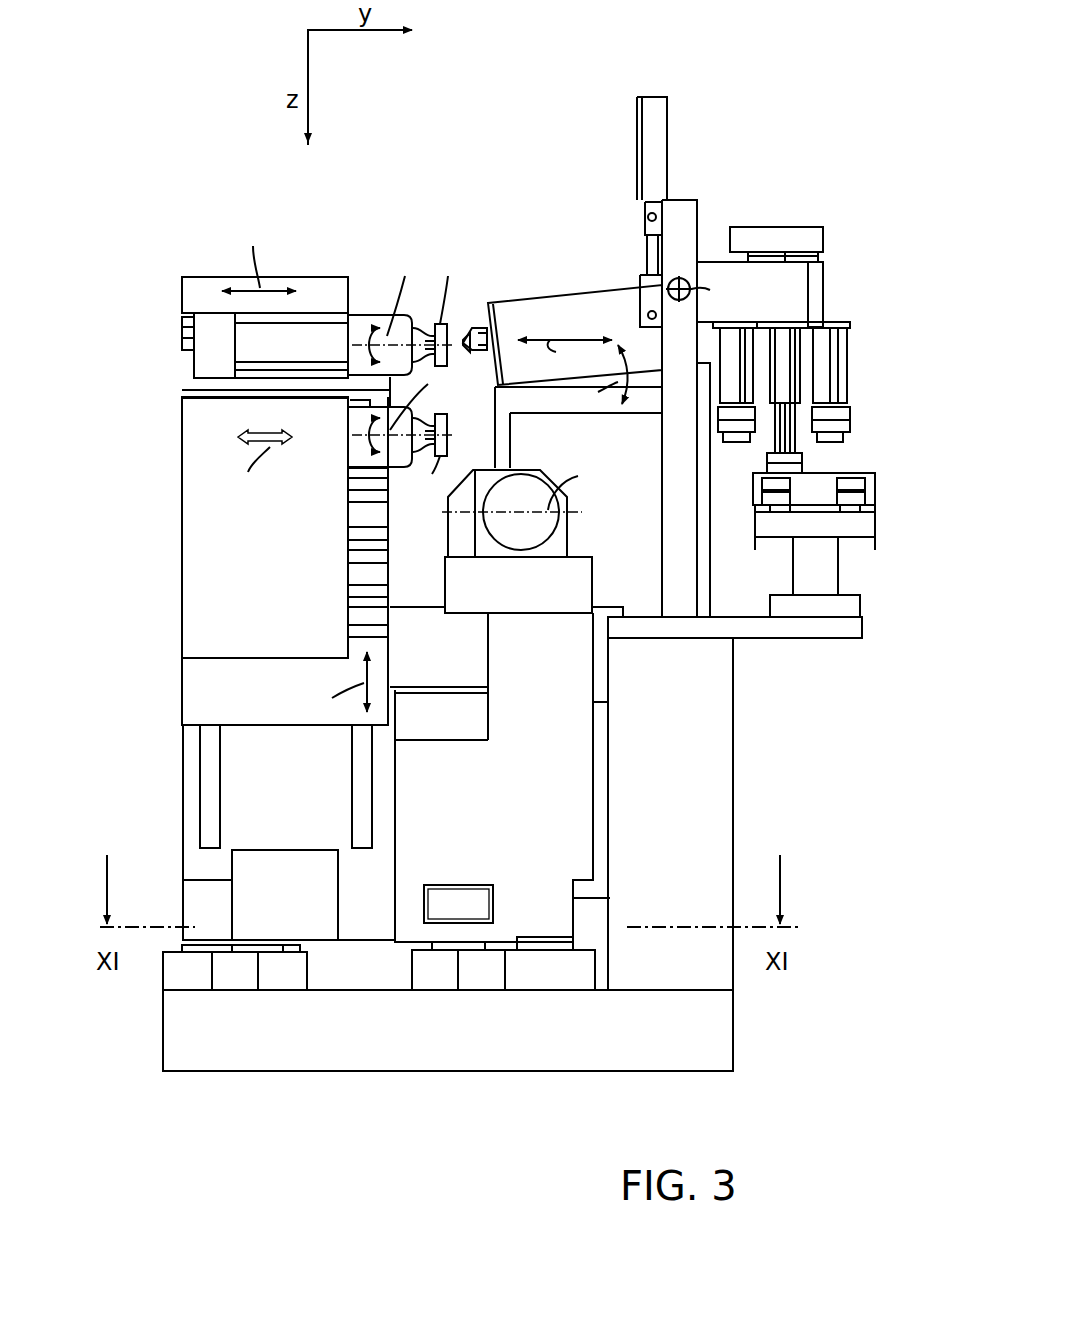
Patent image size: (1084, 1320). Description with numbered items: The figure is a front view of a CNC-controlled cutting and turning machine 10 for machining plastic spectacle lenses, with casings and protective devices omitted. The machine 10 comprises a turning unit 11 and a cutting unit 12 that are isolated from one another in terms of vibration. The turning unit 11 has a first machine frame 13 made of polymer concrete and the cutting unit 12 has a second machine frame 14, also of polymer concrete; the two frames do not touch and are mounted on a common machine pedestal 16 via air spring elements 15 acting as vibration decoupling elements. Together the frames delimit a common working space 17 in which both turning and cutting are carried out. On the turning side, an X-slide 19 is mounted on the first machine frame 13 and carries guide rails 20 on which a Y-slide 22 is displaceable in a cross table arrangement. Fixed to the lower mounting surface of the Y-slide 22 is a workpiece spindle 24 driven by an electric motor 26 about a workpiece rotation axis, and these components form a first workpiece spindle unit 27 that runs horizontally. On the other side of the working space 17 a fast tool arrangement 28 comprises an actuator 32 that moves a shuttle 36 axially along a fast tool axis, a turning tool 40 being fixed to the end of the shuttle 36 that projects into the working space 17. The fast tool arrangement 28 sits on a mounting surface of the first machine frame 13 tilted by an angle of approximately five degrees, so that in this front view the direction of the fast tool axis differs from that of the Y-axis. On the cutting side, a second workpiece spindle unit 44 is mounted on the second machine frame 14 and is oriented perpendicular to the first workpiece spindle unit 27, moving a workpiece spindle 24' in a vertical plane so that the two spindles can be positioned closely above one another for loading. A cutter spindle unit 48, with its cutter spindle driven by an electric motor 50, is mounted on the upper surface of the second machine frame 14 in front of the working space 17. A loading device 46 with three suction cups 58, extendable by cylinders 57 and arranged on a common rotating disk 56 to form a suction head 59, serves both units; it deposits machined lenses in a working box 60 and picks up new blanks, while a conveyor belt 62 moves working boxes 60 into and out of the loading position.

The cutting and turning machine 10 is at (542, 150).
The turning unit 11 is at (598, 272).
The cutting unit 12 is at (566, 776).
The first machine frame 13 is at (598, 446).
The second machine frame 14 is at (498, 814).
The air spring elements 15 is at (238, 972).
The machine pedestal 16 is at (603, 1036).
The working space 17 is at (432, 566).
The X-slide 19 is at (182, 382).
The guide rails 20 is at (182, 320).
The Y-slide 22 is at (216, 286).
The workpiece spindle 24 is at (401, 294).
The workpiece spindle 24' is at (376, 444).
The electric motor 26 is at (208, 328).
The first workpiece spindle unit 27 is at (178, 290).
The first fast tool arrangement 28 is at (575, 327).
The actuator 32 is at (594, 329).
The shuttle 36 is at (478, 328).
The turning tool 40 is at (464, 344).
The second workpiece spindle unit 44 is at (212, 574).
The loading device 46 is at (839, 504).
The cutter spindle unit 48 is at (511, 530).
The electric motor 50 is at (540, 540).
The rotating disk 56 is at (812, 334).
The cylinders 57 is at (834, 343).
The suction cups 58 is at (820, 441).
The suction head 59 is at (824, 326).
The working box 60 is at (868, 493).
The conveyor belt 62 is at (810, 522).